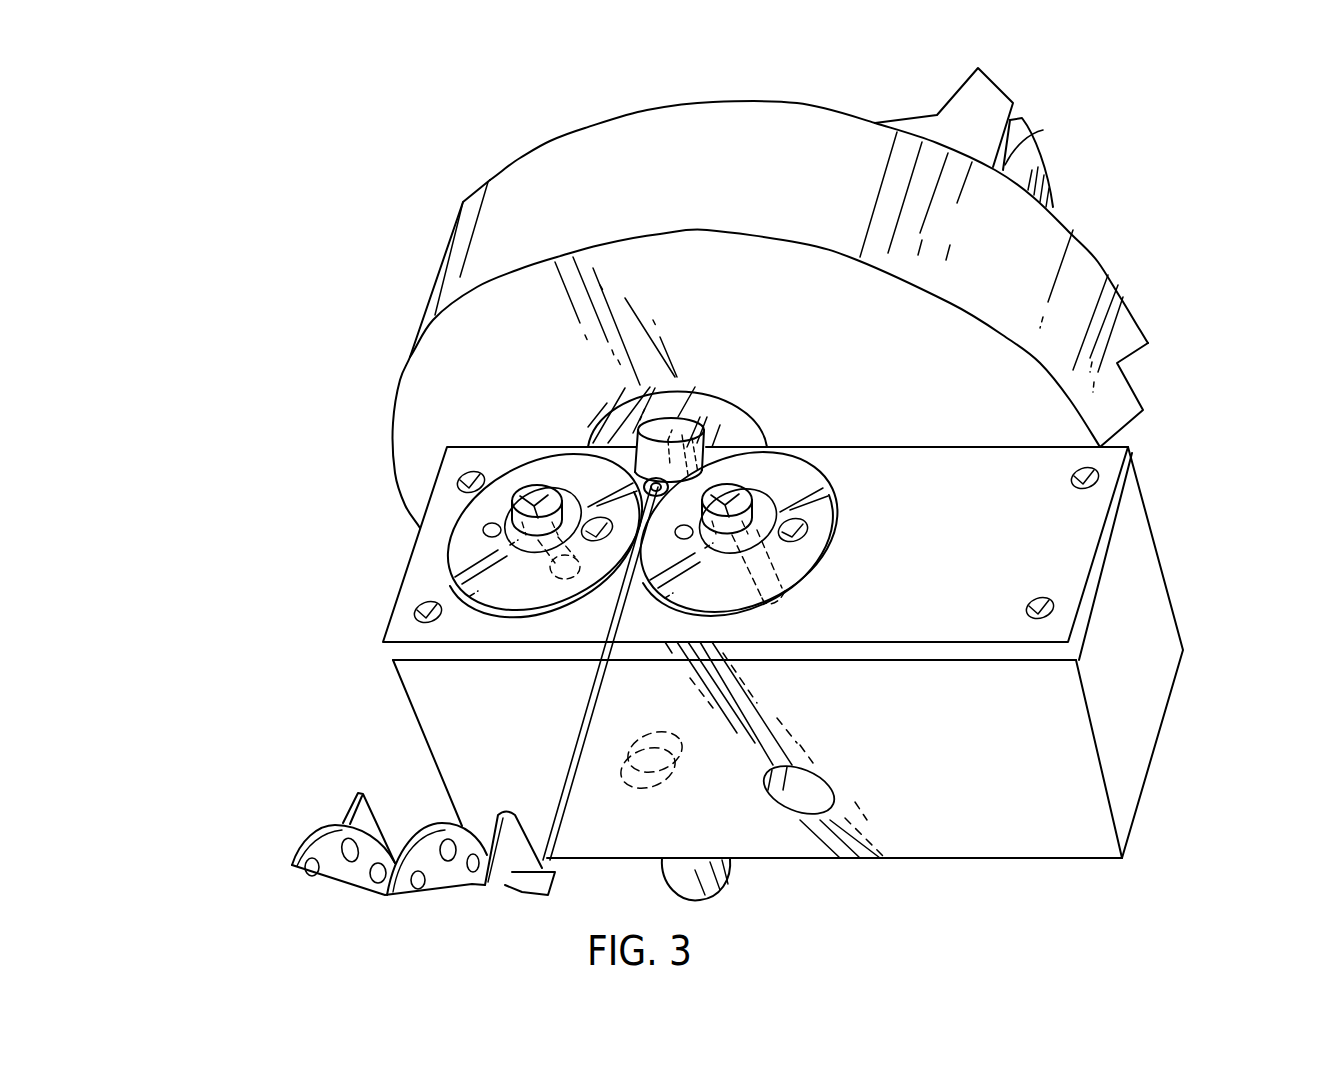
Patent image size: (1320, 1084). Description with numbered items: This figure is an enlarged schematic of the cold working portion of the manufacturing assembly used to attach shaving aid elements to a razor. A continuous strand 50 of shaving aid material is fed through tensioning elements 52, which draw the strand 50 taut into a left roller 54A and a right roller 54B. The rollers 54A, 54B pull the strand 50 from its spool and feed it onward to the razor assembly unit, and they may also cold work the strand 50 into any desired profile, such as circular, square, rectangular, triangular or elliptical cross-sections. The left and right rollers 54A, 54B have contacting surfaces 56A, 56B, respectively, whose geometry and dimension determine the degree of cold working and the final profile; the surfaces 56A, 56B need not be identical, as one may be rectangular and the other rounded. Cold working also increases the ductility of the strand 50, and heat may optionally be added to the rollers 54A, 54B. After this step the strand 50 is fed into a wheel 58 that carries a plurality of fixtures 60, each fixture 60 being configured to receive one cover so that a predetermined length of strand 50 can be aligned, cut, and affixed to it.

The strand 50 is at (557, 768).
The tensioning elements 52 is at (337, 835).
The left roller 54A is at (544, 542).
The right roller 54B is at (779, 502).
The contacting surface 56A is at (525, 612).
The contacting surface 56B is at (838, 522).
The wheel 58 is at (1077, 283).
The fixture 60 is at (1035, 135).